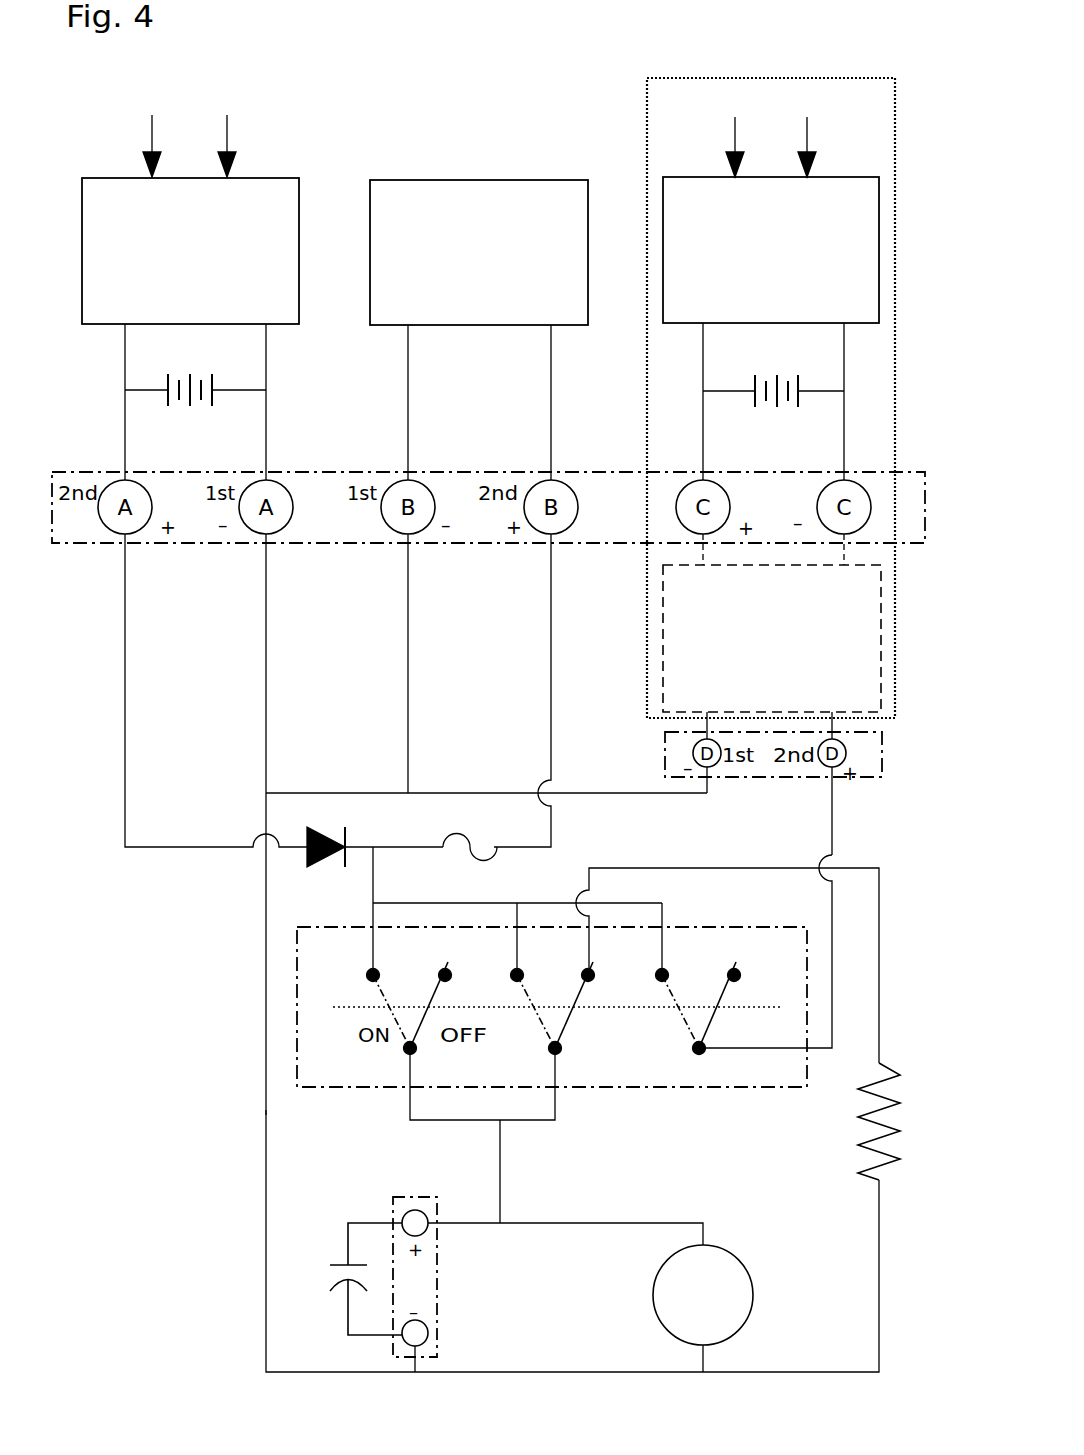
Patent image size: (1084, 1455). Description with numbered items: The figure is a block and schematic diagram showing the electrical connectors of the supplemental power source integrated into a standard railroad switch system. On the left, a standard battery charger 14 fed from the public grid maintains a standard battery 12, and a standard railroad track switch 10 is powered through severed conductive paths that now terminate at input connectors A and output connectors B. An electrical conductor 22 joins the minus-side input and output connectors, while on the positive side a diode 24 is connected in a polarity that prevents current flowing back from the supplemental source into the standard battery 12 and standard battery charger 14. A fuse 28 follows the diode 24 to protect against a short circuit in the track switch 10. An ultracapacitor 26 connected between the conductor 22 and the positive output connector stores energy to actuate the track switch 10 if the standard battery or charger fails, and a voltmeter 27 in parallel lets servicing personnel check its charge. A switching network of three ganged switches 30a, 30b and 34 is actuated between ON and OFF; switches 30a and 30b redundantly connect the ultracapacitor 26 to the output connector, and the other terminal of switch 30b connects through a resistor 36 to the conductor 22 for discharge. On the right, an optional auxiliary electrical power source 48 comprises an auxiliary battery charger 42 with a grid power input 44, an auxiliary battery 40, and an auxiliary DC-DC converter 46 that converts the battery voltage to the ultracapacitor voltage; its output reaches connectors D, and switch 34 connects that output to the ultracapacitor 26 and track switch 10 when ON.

The railroad track switch 10 is at (465, 193).
The standard battery 12 is at (213, 382).
The standard battery charger 14 is at (260, 192).
The electrical conductor 22 is at (266, 1112).
The diode 24 is at (327, 832).
The ultracapacitor 26 is at (345, 1265).
The voltmeter 27 is at (723, 1270).
The fuse 28 is at (460, 832).
The first electrical switch 30a is at (410, 1048).
The second electrical switch 30b is at (555, 1048).
The electrical switch 34 is at (699, 1048).
The resistor 36 is at (900, 1122).
The auxiliary battery 40 is at (798, 385).
The auxiliary battery charger 42 is at (857, 248).
The power input 44 is at (815, 155).
The auxiliary DC-DC converter 46 is at (858, 632).
The auxiliary electrical power source 48 is at (713, 77).